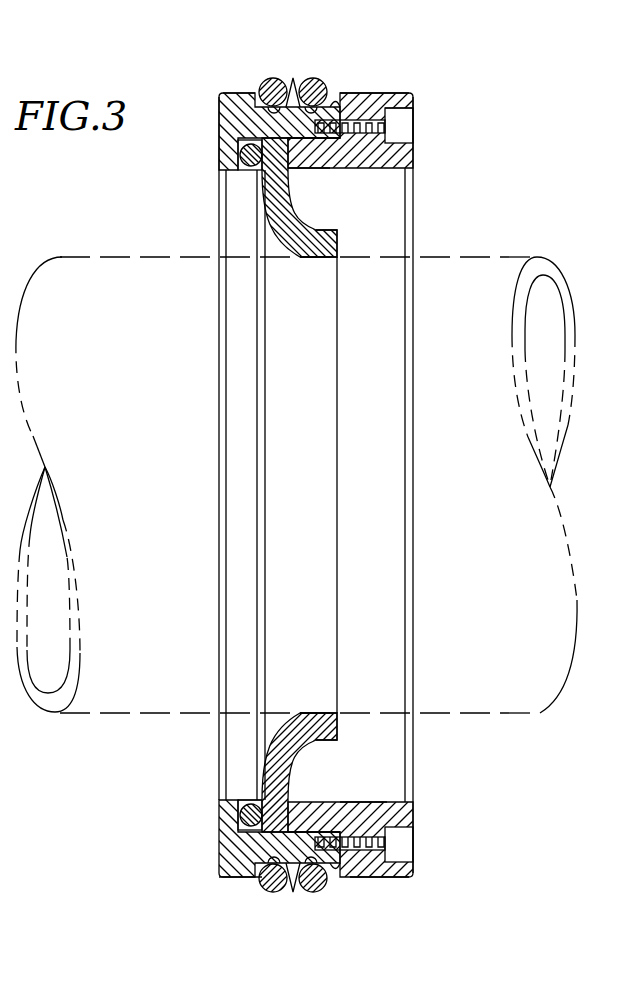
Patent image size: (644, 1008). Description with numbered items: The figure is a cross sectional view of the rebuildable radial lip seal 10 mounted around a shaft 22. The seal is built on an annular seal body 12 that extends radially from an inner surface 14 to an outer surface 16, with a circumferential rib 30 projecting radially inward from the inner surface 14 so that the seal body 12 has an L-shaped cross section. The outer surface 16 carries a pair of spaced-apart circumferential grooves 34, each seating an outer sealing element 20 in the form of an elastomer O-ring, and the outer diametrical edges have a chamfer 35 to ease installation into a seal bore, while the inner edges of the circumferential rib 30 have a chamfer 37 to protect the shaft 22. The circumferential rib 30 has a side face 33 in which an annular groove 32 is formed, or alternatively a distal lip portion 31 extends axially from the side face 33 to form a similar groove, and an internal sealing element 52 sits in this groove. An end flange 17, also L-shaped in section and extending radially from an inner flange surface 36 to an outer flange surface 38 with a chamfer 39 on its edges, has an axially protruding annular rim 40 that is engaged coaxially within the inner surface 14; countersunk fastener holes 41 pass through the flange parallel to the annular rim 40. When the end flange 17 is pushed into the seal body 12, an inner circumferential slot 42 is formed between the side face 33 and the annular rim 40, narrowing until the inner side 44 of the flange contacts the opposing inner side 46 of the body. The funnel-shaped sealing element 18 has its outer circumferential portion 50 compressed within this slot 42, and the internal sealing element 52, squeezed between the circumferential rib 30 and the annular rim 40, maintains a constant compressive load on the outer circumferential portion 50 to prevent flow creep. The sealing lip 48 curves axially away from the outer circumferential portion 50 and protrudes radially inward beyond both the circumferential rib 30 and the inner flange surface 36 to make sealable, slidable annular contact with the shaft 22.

The rebuildable radial lip seal 10 is at (494, 86).
The seal body 12 is at (208, 840).
The inner surface 14 is at (330, 170).
The outer surface 16 is at (238, 93).
The end flange 17 is at (418, 150).
The sealing element 18 is at (278, 242).
The outer sealing element 20 is at (298, 878).
The shaft 22 is at (100, 713).
The circumferential rib 30 is at (219, 158).
The distal lip portion 31 is at (222, 193).
The annular groove 32 is at (219, 128).
The side face 33 is at (230, 870).
The circumferential grooves 34 is at (296, 77).
The chamfer 35 is at (258, 92).
The inner flange surface 36 is at (400, 805).
The chamfer 37 is at (238, 160).
The outer flange surface 38 is at (400, 877).
The chamfer 39 is at (411, 95).
The annular rim 40 is at (305, 172).
The fastener holes 41 is at (413, 125).
The inner circumferential slot 42 is at (240, 219).
The inner side of end flange 44 is at (333, 112).
The inner side of seal body 46 is at (398, 108).
The sealing lip 48 is at (300, 262).
The outer circumferential portion 50 is at (247, 798).
The internal sealing element 52 is at (238, 826).